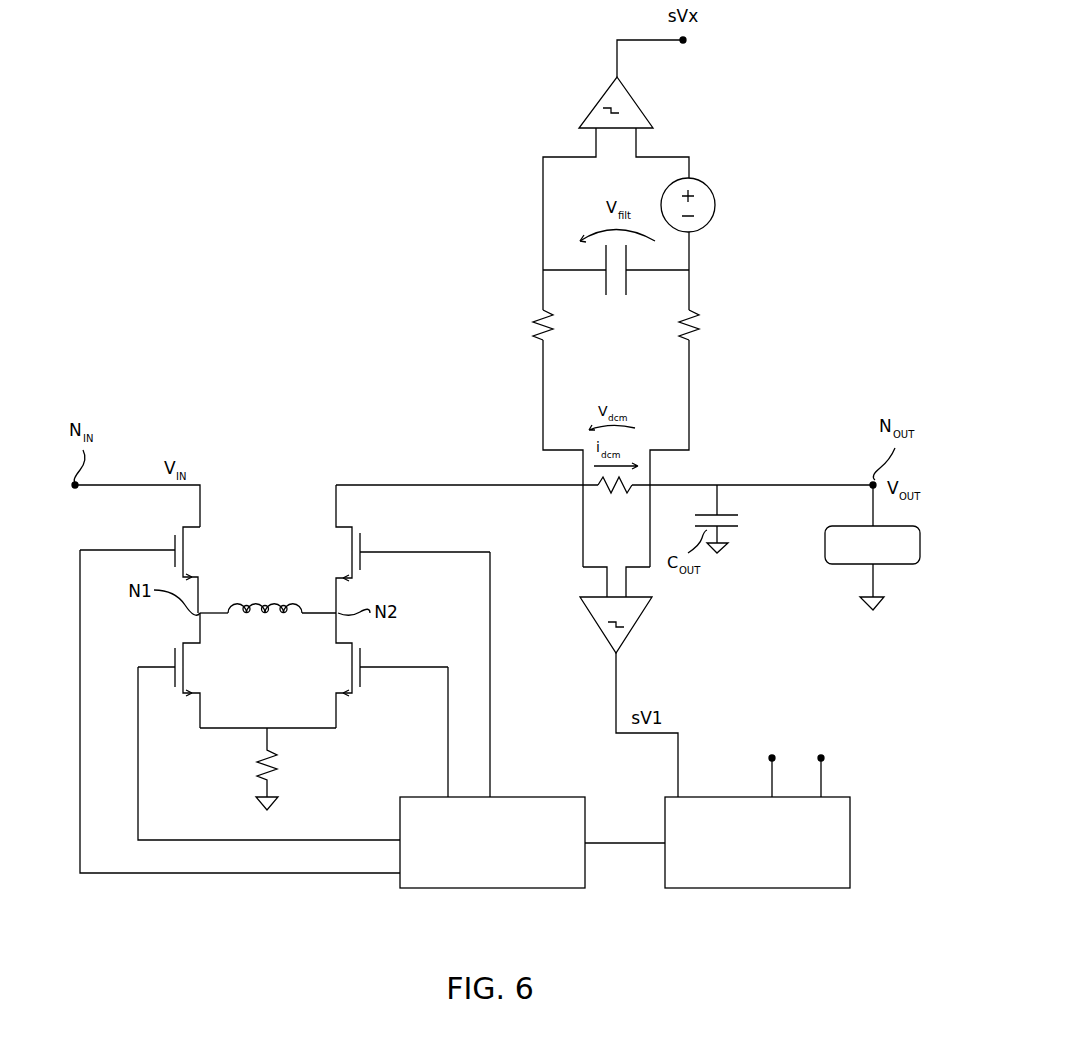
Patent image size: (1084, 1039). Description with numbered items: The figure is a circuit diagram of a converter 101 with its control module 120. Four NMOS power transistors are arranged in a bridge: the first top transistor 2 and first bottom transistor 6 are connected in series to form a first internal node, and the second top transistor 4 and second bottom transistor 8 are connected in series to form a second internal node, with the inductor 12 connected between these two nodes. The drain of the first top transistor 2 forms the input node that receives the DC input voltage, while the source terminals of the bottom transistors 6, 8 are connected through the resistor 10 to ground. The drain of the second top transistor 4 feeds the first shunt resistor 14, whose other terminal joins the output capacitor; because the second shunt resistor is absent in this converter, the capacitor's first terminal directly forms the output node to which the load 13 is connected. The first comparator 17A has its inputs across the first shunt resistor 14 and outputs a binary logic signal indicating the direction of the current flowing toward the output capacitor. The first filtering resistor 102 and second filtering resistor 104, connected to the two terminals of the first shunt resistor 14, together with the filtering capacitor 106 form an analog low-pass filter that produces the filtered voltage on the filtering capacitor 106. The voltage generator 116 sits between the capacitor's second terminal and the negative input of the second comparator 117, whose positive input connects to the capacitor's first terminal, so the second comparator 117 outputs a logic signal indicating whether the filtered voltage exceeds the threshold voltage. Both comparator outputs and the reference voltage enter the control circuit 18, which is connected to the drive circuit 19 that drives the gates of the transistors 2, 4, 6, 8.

The first top transistor 2 is at (175, 547).
The second top transistor 4 is at (360, 538).
The first bottom transistor 6 is at (172, 660).
The second bottom transistor 8 is at (360, 660).
The resistor 10 is at (273, 772).
The inductor 12 is at (275, 620).
The load 13 is at (908, 564).
The first shunt resistor 14 is at (617, 497).
The first comparator 17A is at (623, 633).
The control circuit 18 is at (840, 832).
The drive circuit 19 is at (562, 797).
The converter 101 is at (269, 423).
The first filtering resistor 102 is at (535, 325).
The second filtering resistor 104 is at (692, 328).
The filtering capacitor 106 is at (633, 290).
The voltage generator 116 is at (712, 193).
The second comparator 117 is at (637, 108).
The control module 120 is at (798, 944).